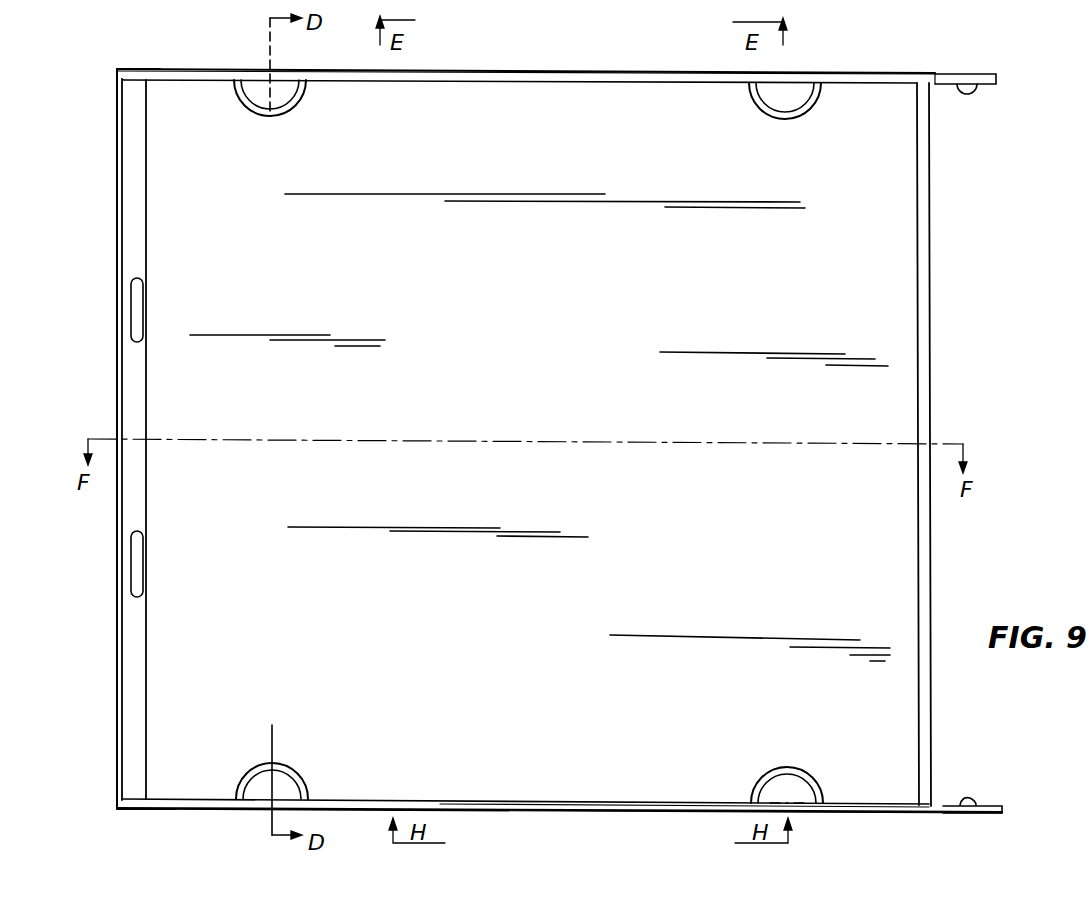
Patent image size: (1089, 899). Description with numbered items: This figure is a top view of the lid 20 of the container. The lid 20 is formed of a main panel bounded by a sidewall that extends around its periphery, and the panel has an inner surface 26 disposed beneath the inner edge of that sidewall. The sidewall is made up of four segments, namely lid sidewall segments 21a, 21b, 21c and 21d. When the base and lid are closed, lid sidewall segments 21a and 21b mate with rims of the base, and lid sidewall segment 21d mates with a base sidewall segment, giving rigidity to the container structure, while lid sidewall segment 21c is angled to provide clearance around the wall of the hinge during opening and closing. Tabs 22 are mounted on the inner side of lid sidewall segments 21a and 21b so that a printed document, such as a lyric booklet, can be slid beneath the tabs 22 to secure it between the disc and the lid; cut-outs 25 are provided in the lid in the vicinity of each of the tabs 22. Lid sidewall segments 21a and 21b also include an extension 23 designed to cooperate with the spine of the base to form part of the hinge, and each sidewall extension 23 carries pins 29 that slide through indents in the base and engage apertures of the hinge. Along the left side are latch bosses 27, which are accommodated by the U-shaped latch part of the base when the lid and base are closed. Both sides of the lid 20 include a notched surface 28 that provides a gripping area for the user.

The lid 20 is at (88, 201).
The lid sidewall segment 21a is at (635, 72).
The lid sidewall segment 21b is at (568, 812).
The lid sidewall segment 21c is at (921, 247).
The lid sidewall segment 21d is at (115, 489).
The tabs 22 is at (262, 92).
The extension 23 is at (998, 80).
The cut-outs 25 is at (808, 114).
The inner surface 26 is at (524, 349).
The latch bosses 27 is at (146, 300).
The notched surface 28 is at (149, 68).
The pins 29 is at (964, 92).